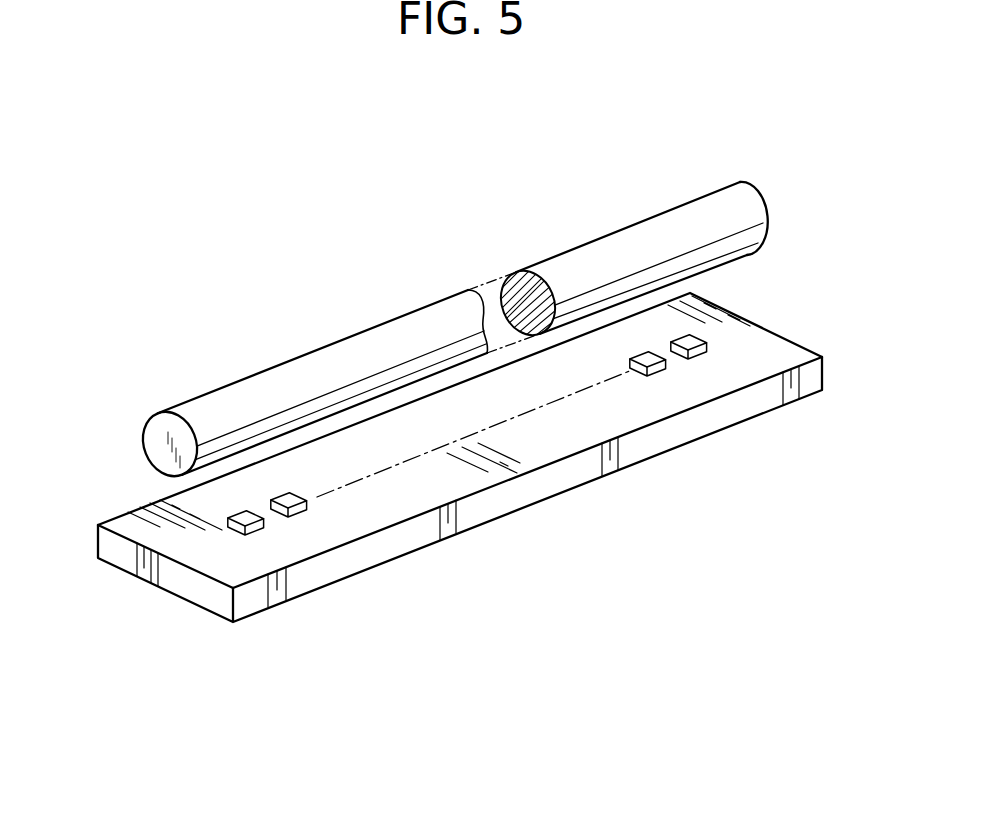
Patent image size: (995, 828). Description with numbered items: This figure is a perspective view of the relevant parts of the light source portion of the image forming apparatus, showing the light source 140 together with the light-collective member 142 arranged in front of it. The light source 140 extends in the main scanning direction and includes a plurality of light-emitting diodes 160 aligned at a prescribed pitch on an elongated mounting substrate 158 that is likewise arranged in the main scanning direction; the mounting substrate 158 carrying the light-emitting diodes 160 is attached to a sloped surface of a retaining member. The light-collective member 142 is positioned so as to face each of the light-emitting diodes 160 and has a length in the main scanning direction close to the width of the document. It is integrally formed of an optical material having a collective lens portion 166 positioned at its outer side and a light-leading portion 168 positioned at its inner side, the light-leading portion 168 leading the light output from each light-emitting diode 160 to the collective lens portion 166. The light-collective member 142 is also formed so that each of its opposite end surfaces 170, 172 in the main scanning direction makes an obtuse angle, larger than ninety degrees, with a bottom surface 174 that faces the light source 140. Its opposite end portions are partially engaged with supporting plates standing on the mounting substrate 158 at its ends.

The light source 140 is at (460, 468).
The light-collective member 142 is at (455, 298).
The mounting substrate 158 is at (655, 443).
The light-emitting diodes 160 is at (303, 509).
The collective lens portion 166 is at (530, 282).
The light-leading portion 168 is at (527, 333).
The end surface 170 is at (167, 443).
The end surface 172 is at (766, 206).
The bottom surface 174 is at (312, 422).